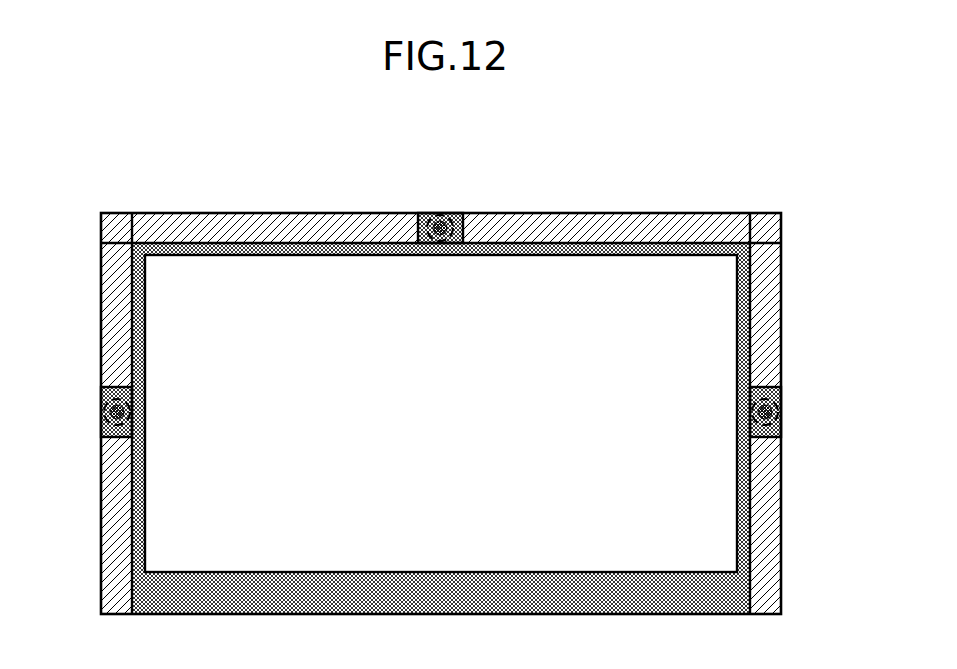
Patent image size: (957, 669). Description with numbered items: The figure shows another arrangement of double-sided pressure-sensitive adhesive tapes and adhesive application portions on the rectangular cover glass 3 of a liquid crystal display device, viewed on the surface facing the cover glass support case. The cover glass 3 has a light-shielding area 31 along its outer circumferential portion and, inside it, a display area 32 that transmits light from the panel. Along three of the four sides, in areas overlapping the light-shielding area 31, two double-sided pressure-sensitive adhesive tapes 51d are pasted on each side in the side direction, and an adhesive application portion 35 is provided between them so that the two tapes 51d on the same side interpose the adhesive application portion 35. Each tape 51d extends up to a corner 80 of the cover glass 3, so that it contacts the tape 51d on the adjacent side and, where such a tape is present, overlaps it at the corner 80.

The cover glass 3 is at (729, 166).
The light-shielding area 31 is at (670, 250).
The display area 32 is at (441, 540).
The adhesive application portion 35 is at (440, 228).
The double-sided pressure-sensitive adhesive tape 51d is at (325, 228).
The corner 80 is at (113, 227).